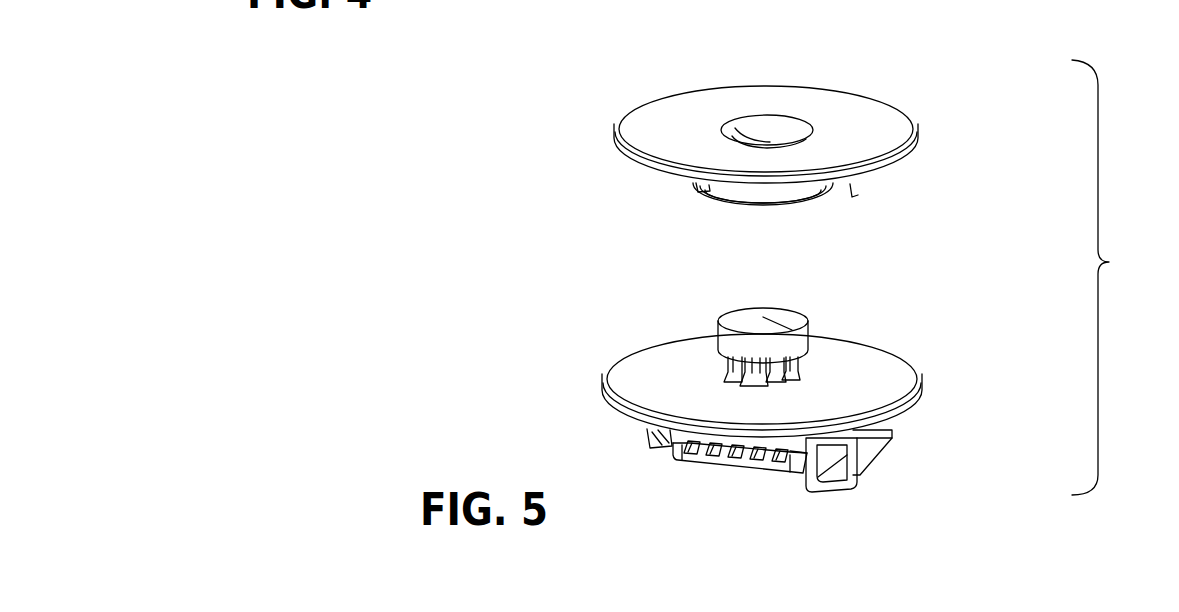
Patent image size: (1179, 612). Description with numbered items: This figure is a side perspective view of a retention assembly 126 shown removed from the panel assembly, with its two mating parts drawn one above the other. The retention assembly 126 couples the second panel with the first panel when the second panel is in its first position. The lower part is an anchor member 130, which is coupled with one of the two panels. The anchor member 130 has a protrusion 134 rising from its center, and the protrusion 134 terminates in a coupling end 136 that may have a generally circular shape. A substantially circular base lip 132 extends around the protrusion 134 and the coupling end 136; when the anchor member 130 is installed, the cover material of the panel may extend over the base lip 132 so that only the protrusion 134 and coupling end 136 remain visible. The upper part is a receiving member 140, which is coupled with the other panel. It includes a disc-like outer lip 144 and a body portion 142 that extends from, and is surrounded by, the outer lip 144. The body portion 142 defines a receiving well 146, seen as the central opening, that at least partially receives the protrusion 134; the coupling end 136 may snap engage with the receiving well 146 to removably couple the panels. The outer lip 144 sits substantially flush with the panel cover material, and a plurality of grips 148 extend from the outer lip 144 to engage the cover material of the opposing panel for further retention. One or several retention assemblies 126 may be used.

The retention assembly 126 is at (1119, 277).
The anchor member 130 is at (822, 364).
The base lip 132 is at (868, 388).
The protrusion 134 is at (778, 363).
The coupling end 136 is at (790, 320).
The receiving member 140 is at (779, 138).
The body portion 142 is at (728, 200).
The outer lip 144 is at (884, 132).
The receiving well 146 is at (780, 117).
The grips 148 is at (635, 167).